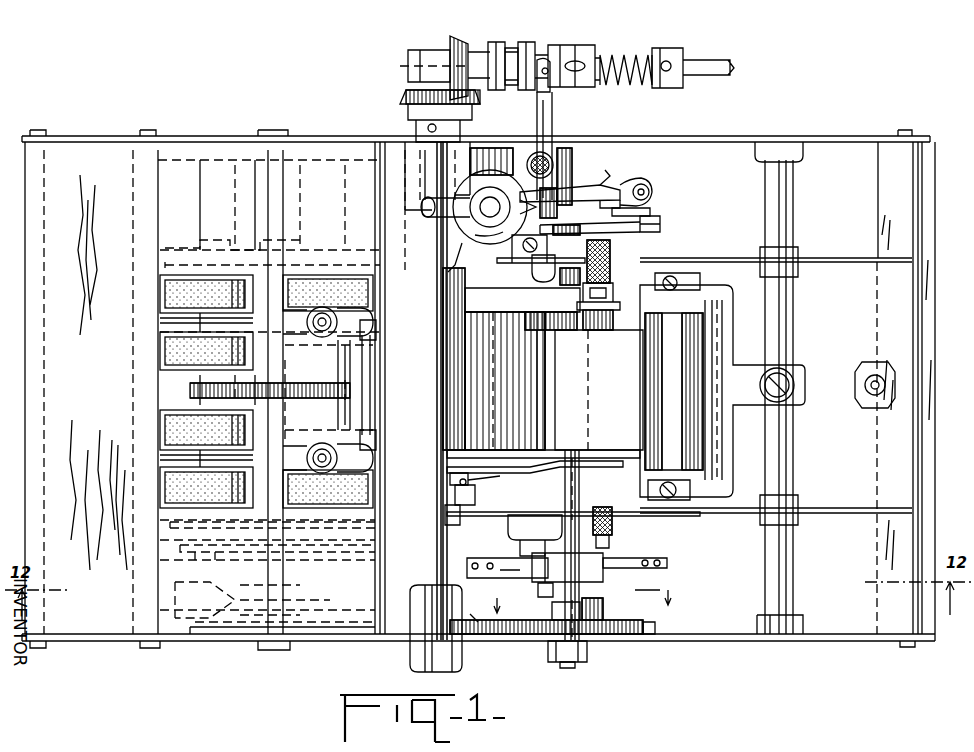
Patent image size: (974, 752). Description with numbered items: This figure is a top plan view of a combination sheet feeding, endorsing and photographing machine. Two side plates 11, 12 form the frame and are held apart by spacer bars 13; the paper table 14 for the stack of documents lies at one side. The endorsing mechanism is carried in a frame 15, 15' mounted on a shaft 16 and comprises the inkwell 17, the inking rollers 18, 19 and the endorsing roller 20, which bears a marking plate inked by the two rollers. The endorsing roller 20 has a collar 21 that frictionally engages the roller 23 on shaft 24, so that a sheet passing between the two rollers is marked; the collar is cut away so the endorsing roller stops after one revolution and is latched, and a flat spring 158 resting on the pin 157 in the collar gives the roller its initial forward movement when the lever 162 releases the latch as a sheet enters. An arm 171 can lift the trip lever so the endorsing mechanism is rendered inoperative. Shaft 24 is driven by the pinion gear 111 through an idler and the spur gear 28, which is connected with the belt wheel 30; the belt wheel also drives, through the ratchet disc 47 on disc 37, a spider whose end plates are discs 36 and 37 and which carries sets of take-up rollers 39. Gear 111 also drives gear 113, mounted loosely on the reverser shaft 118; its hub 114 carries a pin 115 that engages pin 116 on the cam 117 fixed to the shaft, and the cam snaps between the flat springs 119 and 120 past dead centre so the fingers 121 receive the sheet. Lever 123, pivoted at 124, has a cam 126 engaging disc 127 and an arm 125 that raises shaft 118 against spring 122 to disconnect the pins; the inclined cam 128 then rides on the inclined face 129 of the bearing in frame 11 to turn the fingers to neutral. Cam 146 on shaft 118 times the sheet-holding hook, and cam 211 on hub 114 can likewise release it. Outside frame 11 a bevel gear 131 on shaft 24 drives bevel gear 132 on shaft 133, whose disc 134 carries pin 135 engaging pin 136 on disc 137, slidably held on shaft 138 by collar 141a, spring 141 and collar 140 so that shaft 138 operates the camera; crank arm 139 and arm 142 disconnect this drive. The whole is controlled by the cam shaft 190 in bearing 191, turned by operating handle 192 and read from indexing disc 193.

The side plate 11 is at (732, 136).
The side plate 12 is at (848, 634).
The spacer bars 13 is at (924, 176).
The paper table 14 is at (76, 388).
The frame of the endorsing mechanism 15 is at (776, 248).
The frame of the endorsing mechanism 15' is at (776, 499).
The shaft 16 is at (786, 183).
The inkwell 17 is at (700, 300).
The inking roller 18 is at (674, 391).
The inking roller 19 is at (599, 390).
The endorsing roller 20 is at (543, 385).
The collar 21 is at (592, 462).
The roller 23 is at (497, 260).
The shaft 24 is at (462, 583).
The spur gear 28 is at (190, 640).
The belt wheel 30 is at (208, 578).
The disc 36 is at (272, 250).
The disc 37 is at (170, 522).
The take-up rollers 39 is at (170, 347).
The ratchet disc 47 is at (180, 545).
The pinion gear 111 is at (490, 620).
The gear 113 is at (648, 624).
The hub 114 is at (592, 606).
The pin 115 is at (552, 608).
The pin 116 is at (538, 592).
The cam 117 is at (606, 576).
The shaft of the reverser 118 is at (568, 216).
The flat spring 119 is at (500, 562).
The flat spring 120 is at (652, 558).
The fingers 121 is at (612, 248).
The spring 122 is at (648, 228).
The lever 123 is at (646, 210).
The pivot 124 is at (650, 190).
The arm 125 is at (538, 210).
The cam 126 is at (592, 188).
The disc 127 is at (600, 180).
The cam 128 is at (575, 185).
The inclined face of the bearing 129 is at (550, 158).
The bevel gear 131 is at (400, 98).
The bevel gear 132 is at (458, 40).
The shaft 133 is at (408, 64).
The disc 134 is at (497, 40).
The pin 135 is at (510, 46).
The pin 136 is at (532, 36).
The disc 137 is at (532, 90).
The shaft 138 is at (718, 60).
The crank arm 139 is at (537, 118).
The collar 140 is at (580, 52).
The spring 141 is at (646, 46).
The collar 141a is at (674, 48).
The arm 142 is at (510, 190).
The cam 146 is at (588, 541).
The pin 157 is at (516, 302).
The flat spring 158 is at (514, 270).
The lever 162 is at (493, 478).
The arm 171 is at (488, 494).
The cam shaft 190 is at (488, 236).
The bearing 191 is at (491, 161).
The operating handle 192 is at (426, 214).
The indexing disc 193 is at (463, 257).
The cam 211 is at (562, 610).